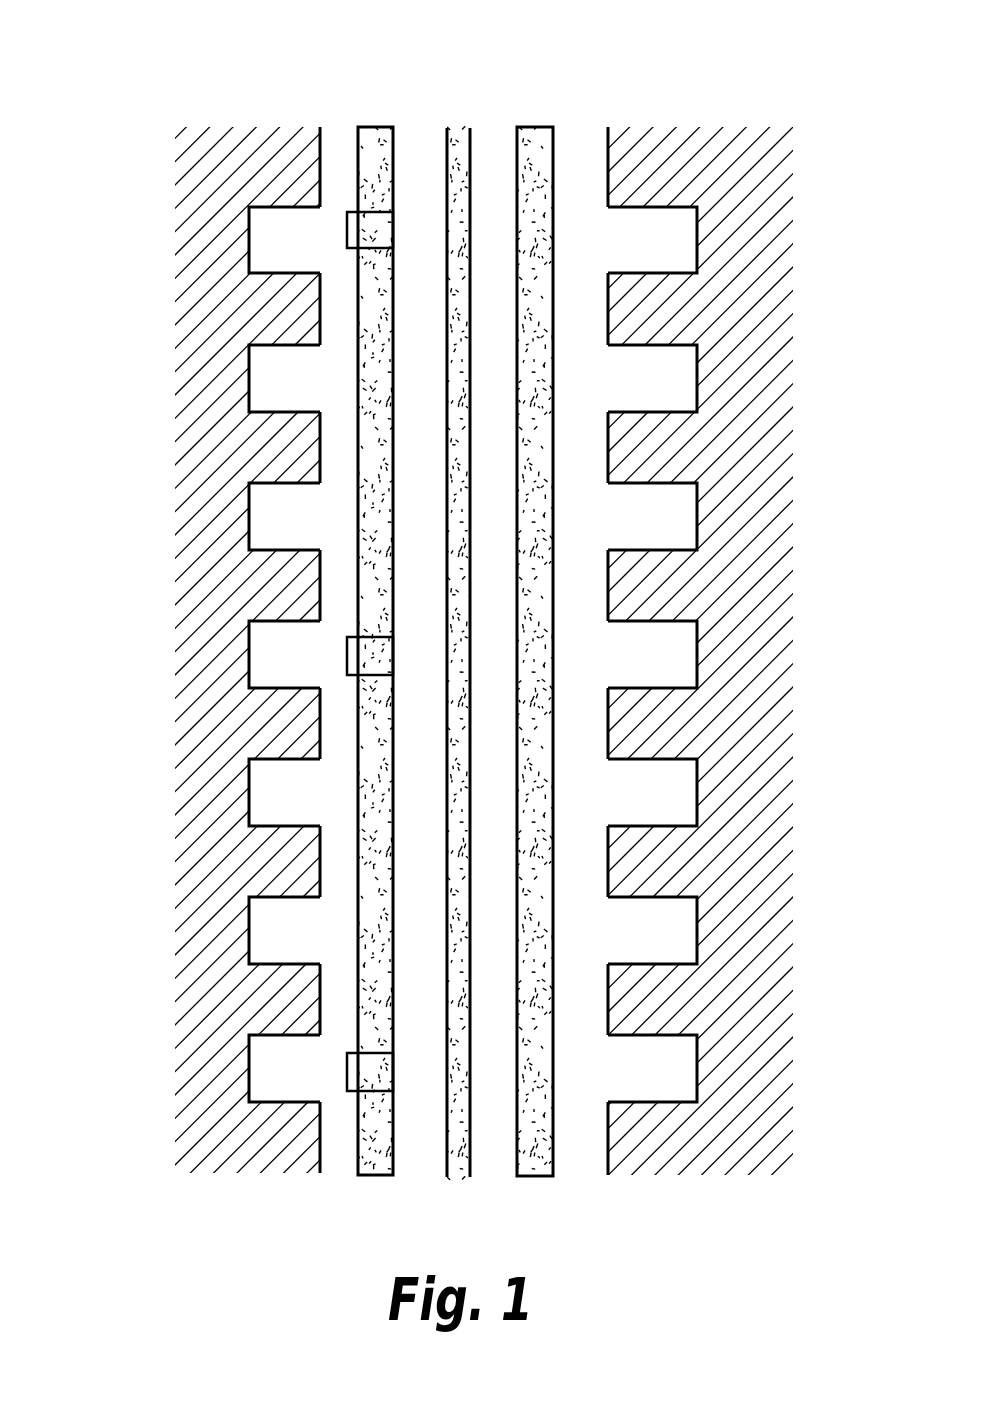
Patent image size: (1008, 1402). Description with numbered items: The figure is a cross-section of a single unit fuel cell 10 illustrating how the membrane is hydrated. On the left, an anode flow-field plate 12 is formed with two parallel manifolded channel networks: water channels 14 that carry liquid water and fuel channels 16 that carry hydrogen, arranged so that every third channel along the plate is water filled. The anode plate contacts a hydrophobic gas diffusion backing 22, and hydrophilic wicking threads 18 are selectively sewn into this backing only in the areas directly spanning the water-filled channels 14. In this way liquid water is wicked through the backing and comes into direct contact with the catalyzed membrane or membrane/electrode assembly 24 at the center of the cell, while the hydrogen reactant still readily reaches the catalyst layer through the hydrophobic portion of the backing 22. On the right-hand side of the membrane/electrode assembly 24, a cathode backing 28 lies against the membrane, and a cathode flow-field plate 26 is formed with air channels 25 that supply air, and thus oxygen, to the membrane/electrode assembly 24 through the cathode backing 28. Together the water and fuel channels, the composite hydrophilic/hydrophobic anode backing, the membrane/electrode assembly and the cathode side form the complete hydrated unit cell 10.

The fuel cell 10 is at (618, 70).
The anode flow-field plate 12 is at (223, 1010).
The water channels 14 is at (275, 240).
The fuel channels 16 is at (275, 378).
The hydrophilic wicking thread 18 is at (373, 226).
The hydrophobic gas diffusion backing 22 is at (372, 859).
The membrane/electrode assembly 24 is at (470, 660).
The air channels 25 is at (667, 230).
The cathode flow-field plate 26 is at (712, 855).
The cathode backing 28 is at (538, 415).